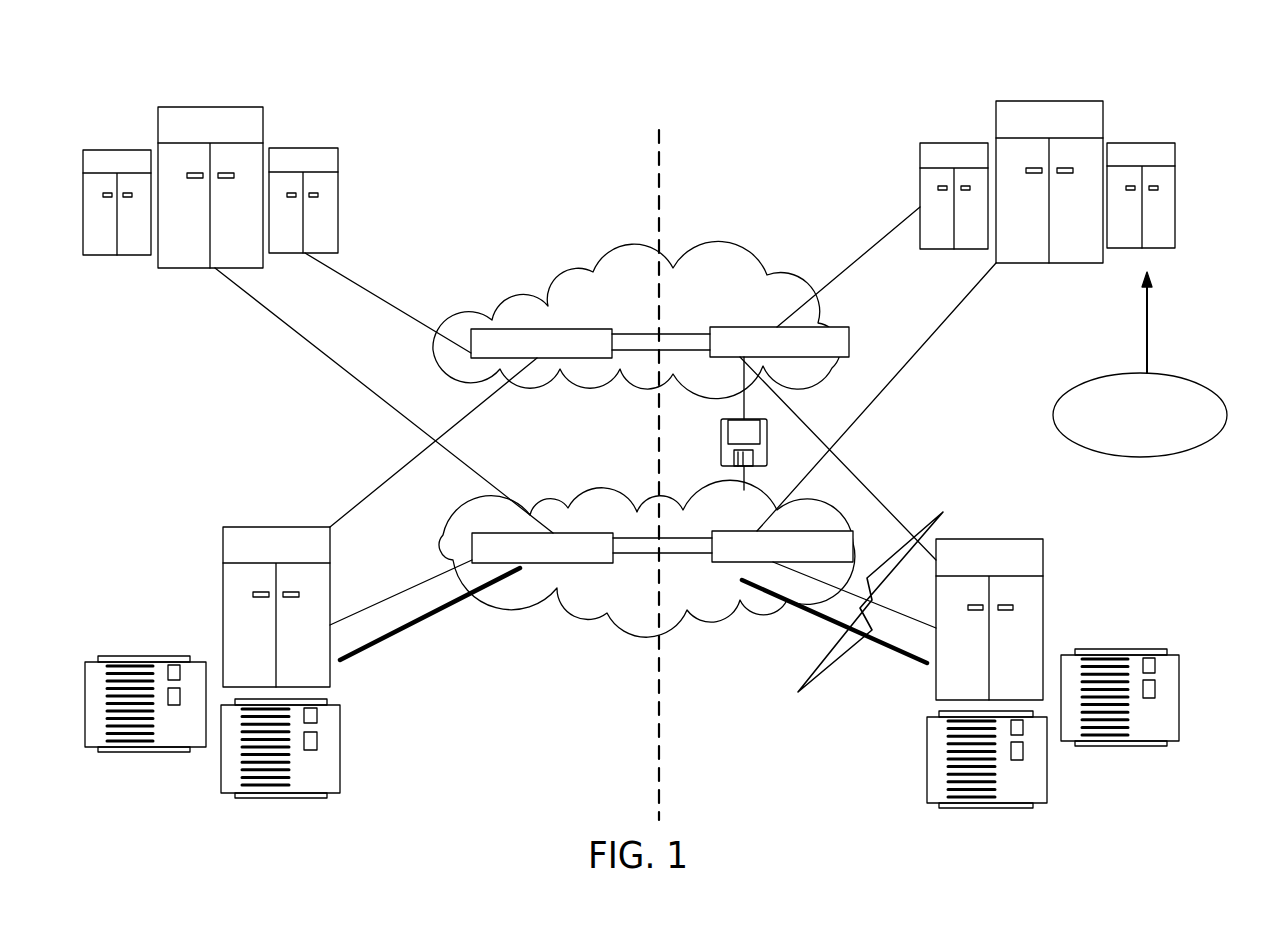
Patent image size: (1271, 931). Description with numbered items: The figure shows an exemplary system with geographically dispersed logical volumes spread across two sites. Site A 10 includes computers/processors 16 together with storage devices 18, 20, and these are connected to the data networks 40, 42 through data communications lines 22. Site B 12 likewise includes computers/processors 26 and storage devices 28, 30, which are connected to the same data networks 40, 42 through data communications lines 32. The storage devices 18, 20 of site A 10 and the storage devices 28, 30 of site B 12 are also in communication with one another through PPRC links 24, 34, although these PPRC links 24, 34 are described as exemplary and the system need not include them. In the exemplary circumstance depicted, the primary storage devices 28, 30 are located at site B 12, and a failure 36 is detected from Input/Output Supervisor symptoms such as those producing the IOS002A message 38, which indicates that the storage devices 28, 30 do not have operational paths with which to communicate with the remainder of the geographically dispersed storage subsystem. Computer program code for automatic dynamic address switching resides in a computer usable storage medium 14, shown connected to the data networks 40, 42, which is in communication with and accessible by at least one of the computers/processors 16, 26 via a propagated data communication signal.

The site A 10 is at (473, 80).
The site B 12 is at (890, 77).
The computer usable storage medium 14 is at (721, 445).
The computers/processors 16 is at (158, 135).
The storage device 18 is at (223, 556).
The storage device 20 is at (190, 772).
The data communications lines 22 is at (372, 290).
The PPRC link 24 is at (395, 633).
The computers/processors 26 is at (1103, 128).
The storage device 28 is at (1043, 608).
The storage device 30 is at (1067, 764).
The data communications lines 32 is at (865, 255).
The PPRC link 34 is at (905, 670).
The failure 36 is at (942, 520).
The IOS002A message 38 is at (1185, 378).
The data network 40 is at (607, 255).
The data network 42 is at (745, 623).